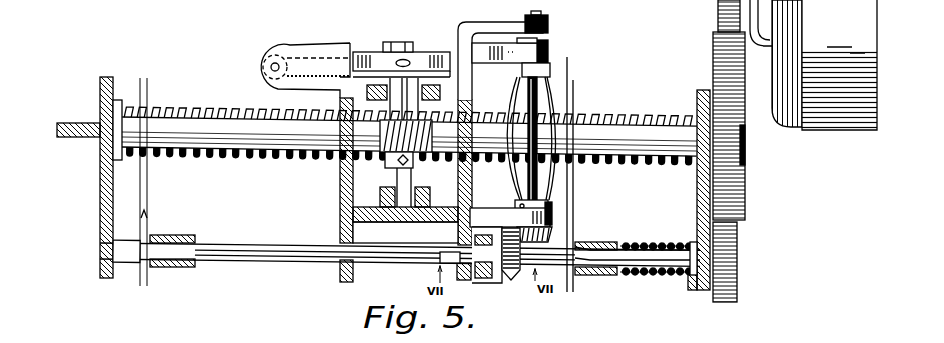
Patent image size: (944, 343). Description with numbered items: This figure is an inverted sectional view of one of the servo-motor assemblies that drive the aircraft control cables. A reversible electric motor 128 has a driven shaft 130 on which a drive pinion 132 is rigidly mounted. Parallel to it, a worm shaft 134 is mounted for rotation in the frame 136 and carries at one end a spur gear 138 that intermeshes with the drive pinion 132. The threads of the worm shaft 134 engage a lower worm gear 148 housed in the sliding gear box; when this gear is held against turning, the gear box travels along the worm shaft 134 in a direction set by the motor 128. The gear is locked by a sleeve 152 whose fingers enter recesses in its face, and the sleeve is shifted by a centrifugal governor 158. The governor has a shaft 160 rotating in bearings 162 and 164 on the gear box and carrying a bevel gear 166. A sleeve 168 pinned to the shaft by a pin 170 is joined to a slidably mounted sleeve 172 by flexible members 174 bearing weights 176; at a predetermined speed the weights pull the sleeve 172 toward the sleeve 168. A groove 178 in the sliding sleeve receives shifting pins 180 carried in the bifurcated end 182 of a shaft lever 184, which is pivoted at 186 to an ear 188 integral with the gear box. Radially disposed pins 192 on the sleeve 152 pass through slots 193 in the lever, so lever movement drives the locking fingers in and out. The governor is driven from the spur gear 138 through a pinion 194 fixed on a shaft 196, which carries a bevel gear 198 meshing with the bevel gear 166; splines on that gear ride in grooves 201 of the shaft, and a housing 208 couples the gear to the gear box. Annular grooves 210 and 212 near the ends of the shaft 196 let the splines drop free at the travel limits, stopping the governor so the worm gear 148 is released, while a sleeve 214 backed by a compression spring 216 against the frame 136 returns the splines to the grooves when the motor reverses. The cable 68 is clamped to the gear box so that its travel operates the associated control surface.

The cable 68 is at (80, 137).
The reversible electric motor 128 is at (829, 128).
The driven shaft 130 is at (753, 14).
The drive pinion 132 is at (718, 10).
The worm shaft 134 is at (667, 112).
The frame 136 is at (100, 88).
The spur gear 138 is at (745, 184).
The worm gear 148 is at (393, 163).
The sleeve 152 is at (405, 42).
The centrifugal governor 158 is at (606, 47).
The shaft 160 is at (541, 7).
The bearing 162 is at (500, 30).
The bearing 164 is at (495, 211).
The bevel gear 166 is at (552, 230).
The sleeve 168 is at (548, 205).
The pin 170 is at (530, 208).
The slidably mounted sleeve 172 is at (540, 72).
The flexible members 174 is at (553, 97).
The weights 176 is at (574, 116).
The groove 178 is at (547, 45).
The shifting pins 180 is at (548, 24).
The bifurcated end 182 is at (523, 68).
The shaft lever 184 is at (446, 56).
The pivot 186 is at (275, 63).
The ear 188 is at (318, 47).
The radially disposed pins 192 is at (414, 50).
The slots 193 is at (397, 48).
The pinion 194 is at (738, 268).
The shaft 196 is at (396, 262).
The bevel gear 198 is at (508, 281).
The grooves 201 is at (286, 262).
The housing 208 is at (480, 283).
The annular groove 210 is at (598, 239).
The annular groove 212 is at (171, 267).
The sleeve 214 is at (626, 245).
The compression spring 216 is at (678, 240).